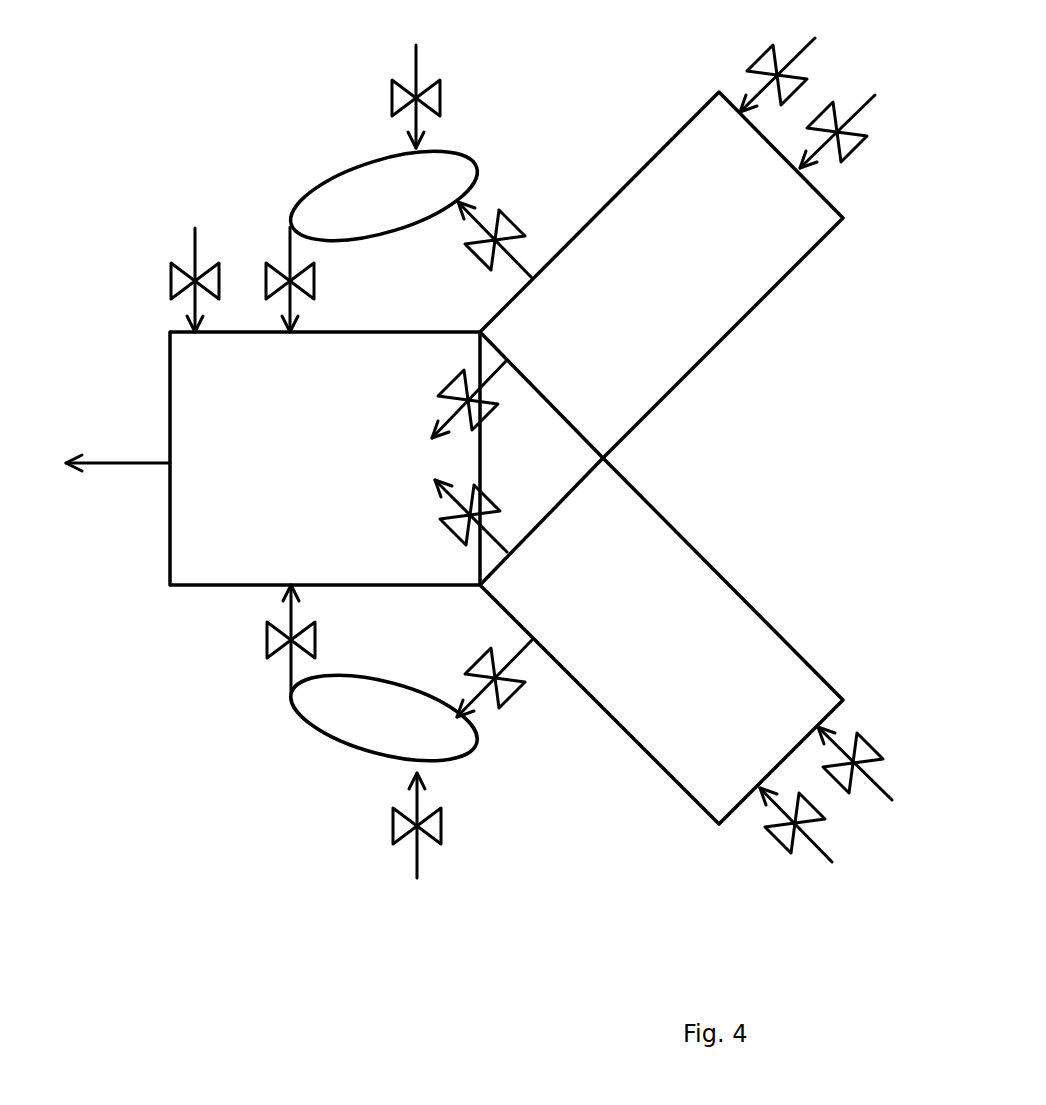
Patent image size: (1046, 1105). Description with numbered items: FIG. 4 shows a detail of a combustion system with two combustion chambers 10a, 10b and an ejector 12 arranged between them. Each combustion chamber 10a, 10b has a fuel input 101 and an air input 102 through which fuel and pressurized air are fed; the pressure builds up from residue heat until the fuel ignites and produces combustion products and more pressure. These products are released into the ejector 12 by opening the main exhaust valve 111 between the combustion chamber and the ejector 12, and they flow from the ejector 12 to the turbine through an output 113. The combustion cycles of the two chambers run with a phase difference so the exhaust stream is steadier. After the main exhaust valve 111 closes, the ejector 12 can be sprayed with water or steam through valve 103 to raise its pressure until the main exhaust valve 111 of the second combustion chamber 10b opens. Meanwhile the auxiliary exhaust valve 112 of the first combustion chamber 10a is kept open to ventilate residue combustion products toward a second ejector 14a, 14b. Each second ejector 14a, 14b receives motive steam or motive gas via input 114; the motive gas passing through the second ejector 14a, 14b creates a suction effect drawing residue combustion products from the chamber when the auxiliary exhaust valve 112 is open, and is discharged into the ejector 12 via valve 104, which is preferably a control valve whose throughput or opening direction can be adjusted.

The ejector 12 is at (190, 567).
The first combustion chamber 10a is at (675, 133).
The second combustion chamber 10b is at (703, 805).
The second ejector 14a is at (323, 182).
The second ejector 14b is at (363, 760).
The fuel input 101 is at (753, 62).
The air input 102 is at (828, 103).
The valve 103 is at (172, 283).
The valve 104 is at (315, 290).
The main exhaust valve 111 is at (467, 375).
The auxiliary exhaust valve 112 is at (470, 257).
The output 113 is at (150, 462).
The input 114 is at (392, 98).